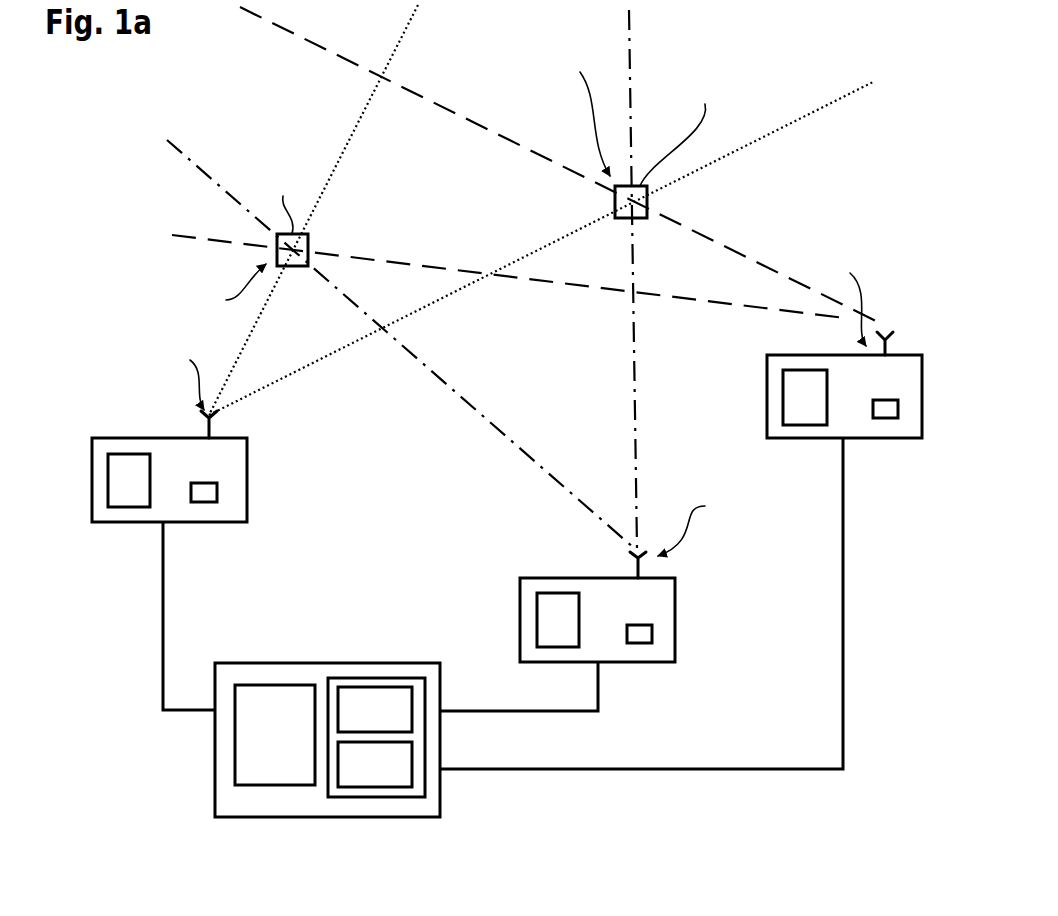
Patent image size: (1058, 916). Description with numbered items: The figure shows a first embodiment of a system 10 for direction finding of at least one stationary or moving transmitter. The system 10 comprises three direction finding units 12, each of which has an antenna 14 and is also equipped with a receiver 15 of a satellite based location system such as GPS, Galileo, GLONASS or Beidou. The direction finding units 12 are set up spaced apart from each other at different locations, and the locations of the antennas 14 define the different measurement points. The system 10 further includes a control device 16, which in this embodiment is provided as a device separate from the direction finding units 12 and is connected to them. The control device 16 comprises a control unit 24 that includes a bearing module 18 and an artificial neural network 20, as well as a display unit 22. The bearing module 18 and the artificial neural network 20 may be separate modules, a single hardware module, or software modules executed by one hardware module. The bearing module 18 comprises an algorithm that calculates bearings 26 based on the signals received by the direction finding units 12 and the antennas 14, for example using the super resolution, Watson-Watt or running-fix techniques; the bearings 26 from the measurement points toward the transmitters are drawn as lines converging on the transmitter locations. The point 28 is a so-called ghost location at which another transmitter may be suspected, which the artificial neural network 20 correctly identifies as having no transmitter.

The system 10 is at (666, 843).
The direction finding unit 12 is at (118, 523).
The antenna 14 is at (222, 424).
The receiver 15 is at (218, 492).
The control device 16 is at (325, 818).
The bearing module 18 is at (352, 688).
The artificial neural network 20 is at (410, 778).
The display unit 22 is at (260, 688).
The control unit 24 is at (398, 676).
The bearing 26 is at (423, 98).
The point 28 is at (377, 62).